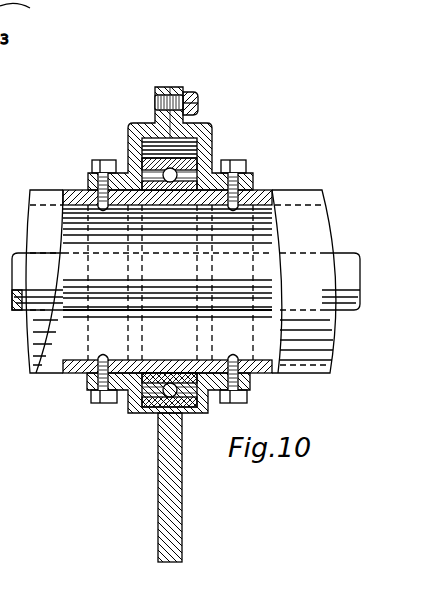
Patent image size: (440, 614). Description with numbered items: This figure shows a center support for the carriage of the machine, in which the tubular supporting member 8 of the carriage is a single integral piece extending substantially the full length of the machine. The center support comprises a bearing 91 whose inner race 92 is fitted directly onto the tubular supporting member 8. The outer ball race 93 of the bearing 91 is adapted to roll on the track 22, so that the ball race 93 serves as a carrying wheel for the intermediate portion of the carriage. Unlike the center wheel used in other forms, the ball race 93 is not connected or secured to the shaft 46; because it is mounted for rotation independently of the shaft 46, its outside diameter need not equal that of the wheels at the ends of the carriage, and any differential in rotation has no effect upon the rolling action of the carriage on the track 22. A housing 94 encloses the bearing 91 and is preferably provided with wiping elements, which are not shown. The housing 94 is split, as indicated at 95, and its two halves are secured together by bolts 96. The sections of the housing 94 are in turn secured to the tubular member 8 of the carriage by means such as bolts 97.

The tubular supporting member 8 is at (300, 198).
The track 22 is at (163, 519).
The shaft 46 is at (345, 262).
The bearing 91 is at (168, 305).
The inner race 92 is at (213, 185).
The outer ball race 93 is at (142, 162).
The housing 94 is at (121, 135).
The split 95 is at (174, 79).
The bolts 96 is at (190, 95).
The bolts 97 is at (92, 163).